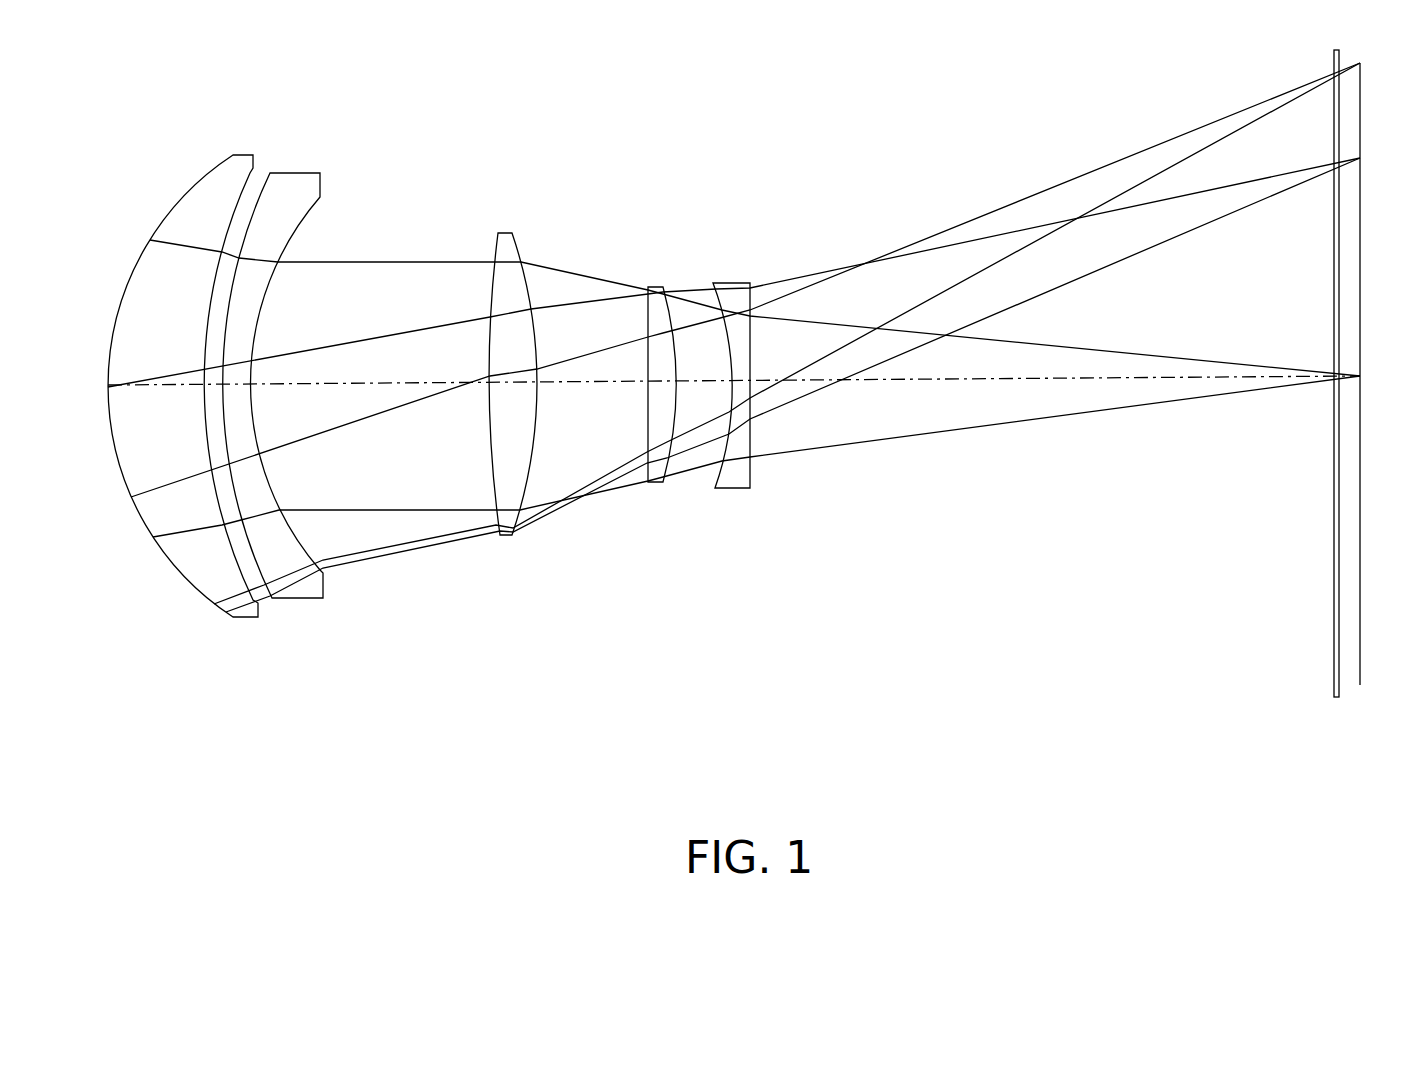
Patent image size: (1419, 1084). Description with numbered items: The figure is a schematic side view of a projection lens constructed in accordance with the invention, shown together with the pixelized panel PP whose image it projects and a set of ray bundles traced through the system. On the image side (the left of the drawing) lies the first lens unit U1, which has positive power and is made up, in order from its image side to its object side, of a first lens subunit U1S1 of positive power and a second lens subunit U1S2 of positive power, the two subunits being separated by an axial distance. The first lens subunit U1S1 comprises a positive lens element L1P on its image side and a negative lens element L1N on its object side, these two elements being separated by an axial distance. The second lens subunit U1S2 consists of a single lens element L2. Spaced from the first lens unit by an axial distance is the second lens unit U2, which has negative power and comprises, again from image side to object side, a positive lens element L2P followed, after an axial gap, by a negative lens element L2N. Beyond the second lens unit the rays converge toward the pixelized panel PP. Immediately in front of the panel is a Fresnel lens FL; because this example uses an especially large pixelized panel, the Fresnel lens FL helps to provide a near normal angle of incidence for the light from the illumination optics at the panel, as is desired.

The first lens unit U1 is at (537, 100).
The second lens unit U2 is at (753, 100).
The first lens subunit U1S1 is at (357, 660).
The second lens subunit U1S2 is at (537, 660).
The positive lens element L1P is at (178, 545).
The negative lens element L1N is at (257, 480).
The single lens element L2 is at (500, 441).
The positive lens element L2P is at (662, 408).
The negative lens element L2N is at (742, 470).
The Fresnel lens FL is at (1334, 628).
The pixelized panel PP is at (1360, 665).